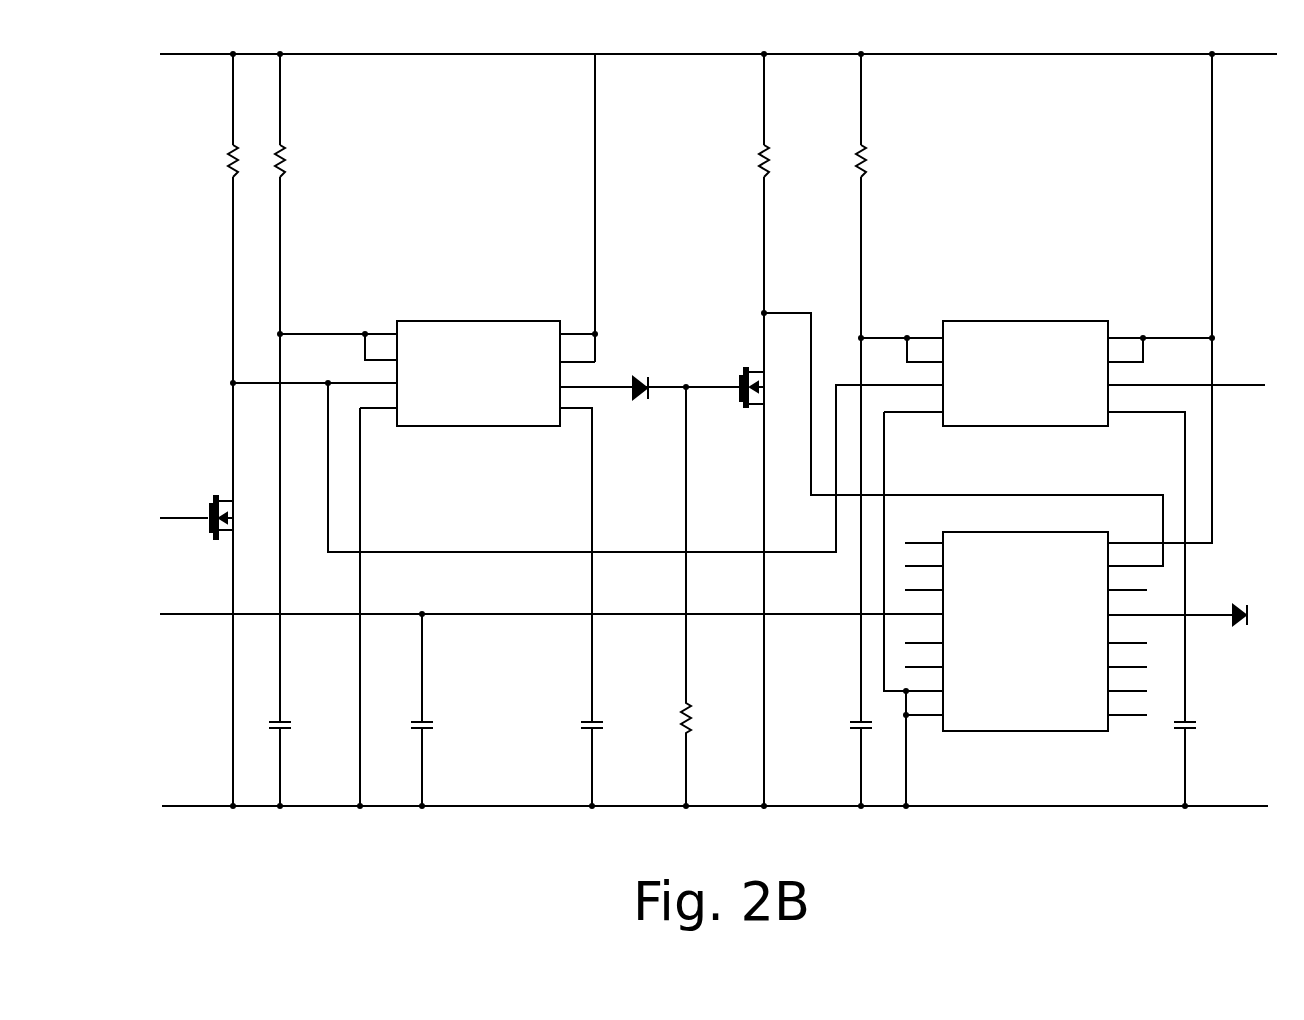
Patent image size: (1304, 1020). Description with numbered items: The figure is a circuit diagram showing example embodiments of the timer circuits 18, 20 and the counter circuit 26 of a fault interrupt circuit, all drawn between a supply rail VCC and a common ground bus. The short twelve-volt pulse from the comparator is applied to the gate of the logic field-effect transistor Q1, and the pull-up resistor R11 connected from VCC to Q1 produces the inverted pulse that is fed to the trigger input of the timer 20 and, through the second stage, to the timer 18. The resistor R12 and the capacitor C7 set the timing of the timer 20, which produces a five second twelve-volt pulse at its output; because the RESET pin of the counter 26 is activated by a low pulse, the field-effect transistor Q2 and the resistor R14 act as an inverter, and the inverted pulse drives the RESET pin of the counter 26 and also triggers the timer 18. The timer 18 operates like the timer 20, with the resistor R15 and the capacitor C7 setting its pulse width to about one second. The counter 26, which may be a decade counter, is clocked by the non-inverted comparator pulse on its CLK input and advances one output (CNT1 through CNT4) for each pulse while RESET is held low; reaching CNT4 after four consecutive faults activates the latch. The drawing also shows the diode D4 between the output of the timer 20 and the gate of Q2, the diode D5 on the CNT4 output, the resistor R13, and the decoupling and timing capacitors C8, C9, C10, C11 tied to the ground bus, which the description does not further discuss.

The timer circuit 18 is at (1010, 321).
The timer circuit 20 is at (443, 321).
The counter circuit 26 is at (1022, 532).
The pull-up resistor R11 is at (208, 161).
The resistor R12 is at (306, 161).
The resistor R13 is at (711, 596).
The resistor R14 is at (792, 161).
The resistor R15 is at (886, 161).
The capacitor C7 is at (294, 724).
The capacitor C8 is at (440, 710).
The capacitor C9 is at (612, 725).
The capacitor C10 is at (836, 725).
The capacitor C11 is at (1206, 725).
The logic field-effect transistor Q1 is at (214, 517).
The field-effect transistor Q2 is at (770, 387).
The diode D4 is at (642, 404).
The diode D5 is at (1242, 630).
The supply voltage VCC is at (418, 54).